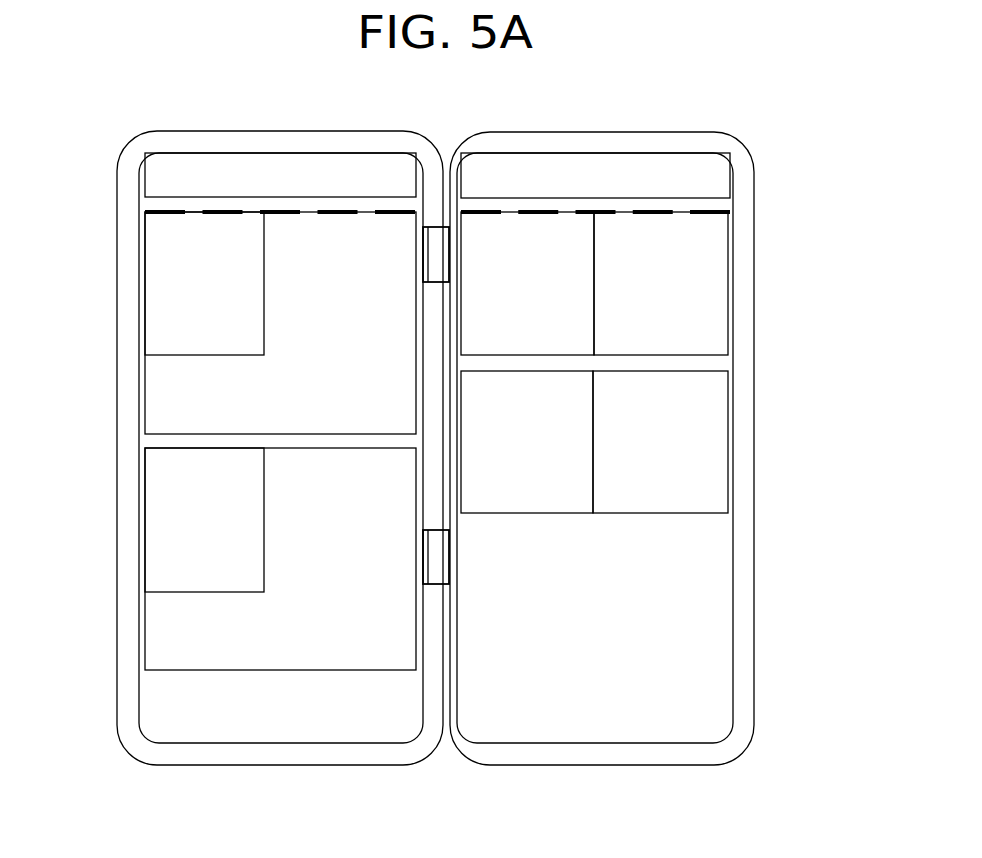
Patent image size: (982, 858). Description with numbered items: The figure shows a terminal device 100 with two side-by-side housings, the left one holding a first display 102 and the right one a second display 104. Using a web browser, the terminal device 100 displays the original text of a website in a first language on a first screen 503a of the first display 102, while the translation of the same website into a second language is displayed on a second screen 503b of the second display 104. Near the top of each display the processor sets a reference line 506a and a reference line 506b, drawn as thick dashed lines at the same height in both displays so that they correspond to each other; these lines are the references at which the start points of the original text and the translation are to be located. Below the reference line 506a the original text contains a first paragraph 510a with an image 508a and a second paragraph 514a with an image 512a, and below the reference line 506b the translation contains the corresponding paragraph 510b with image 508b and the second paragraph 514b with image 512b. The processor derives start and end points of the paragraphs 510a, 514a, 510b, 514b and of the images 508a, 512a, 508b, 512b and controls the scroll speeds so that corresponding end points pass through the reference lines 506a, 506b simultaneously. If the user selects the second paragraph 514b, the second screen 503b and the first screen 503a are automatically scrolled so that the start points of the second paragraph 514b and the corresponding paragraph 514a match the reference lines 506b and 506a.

The terminal device 100 is at (163, 116).
The first display 102 is at (275, 766).
The second display 104 is at (595, 766).
The first screen 503a is at (162, 710).
The second screen 503b is at (710, 637).
The reference line 506a is at (403, 211).
The reference line 506b is at (480, 211).
The image 508a is at (162, 283).
The image 508b is at (577, 305).
The paragraph 510a is at (162, 396).
The paragraph 510b is at (708, 281).
The image 512a is at (162, 522).
The image 512b is at (577, 463).
The paragraph 514a is at (162, 633).
The second paragraph 514b is at (710, 439).